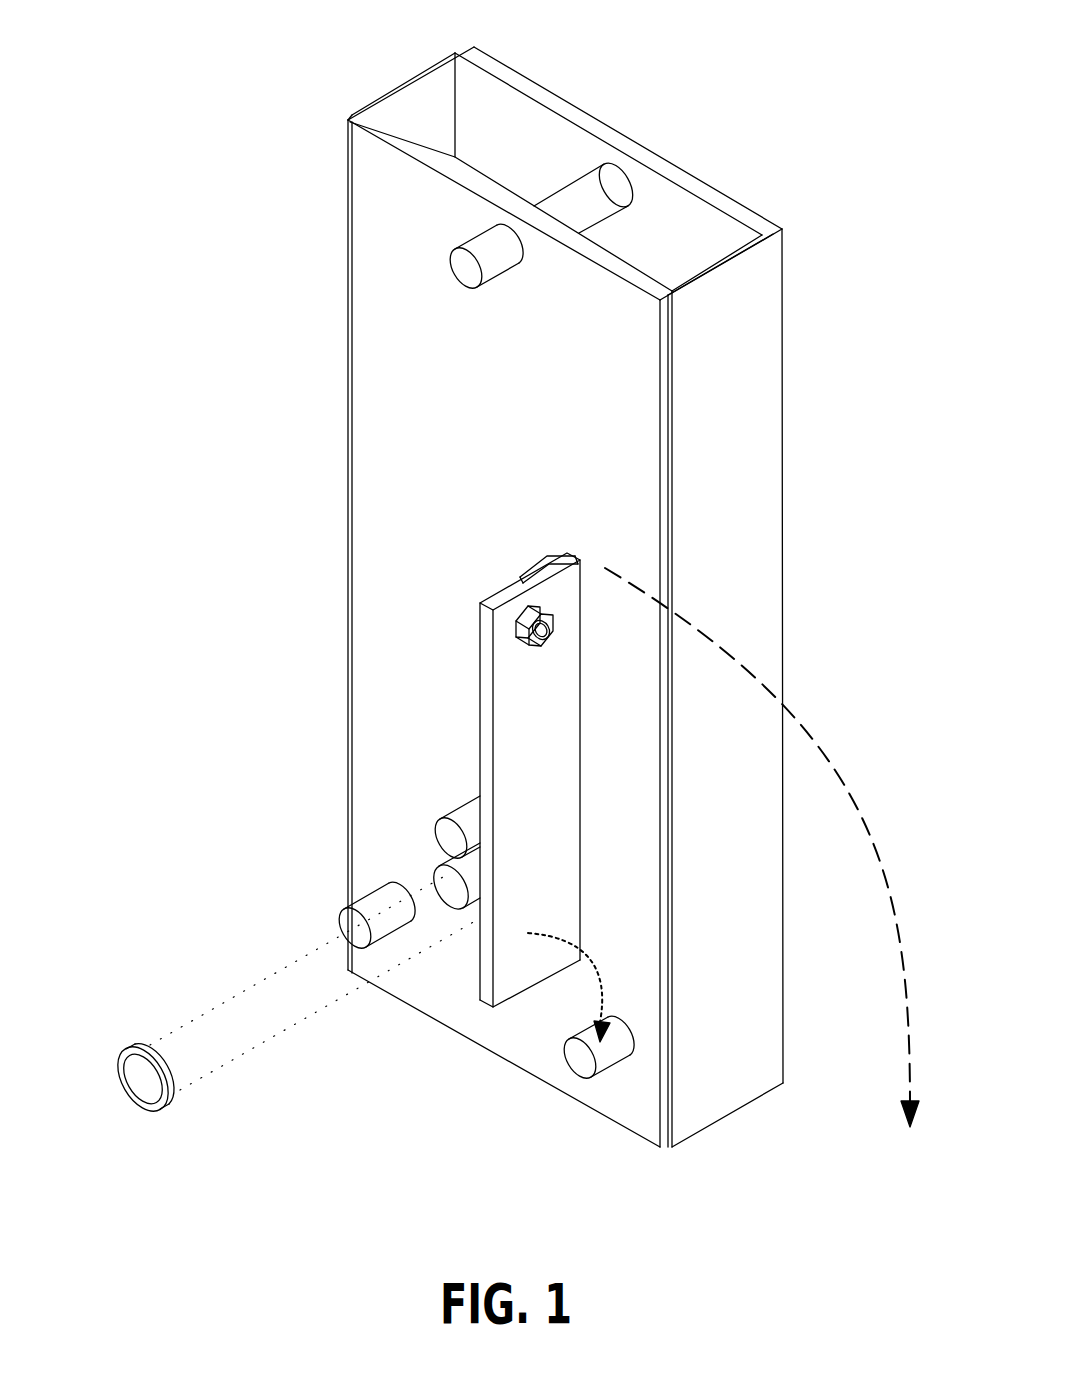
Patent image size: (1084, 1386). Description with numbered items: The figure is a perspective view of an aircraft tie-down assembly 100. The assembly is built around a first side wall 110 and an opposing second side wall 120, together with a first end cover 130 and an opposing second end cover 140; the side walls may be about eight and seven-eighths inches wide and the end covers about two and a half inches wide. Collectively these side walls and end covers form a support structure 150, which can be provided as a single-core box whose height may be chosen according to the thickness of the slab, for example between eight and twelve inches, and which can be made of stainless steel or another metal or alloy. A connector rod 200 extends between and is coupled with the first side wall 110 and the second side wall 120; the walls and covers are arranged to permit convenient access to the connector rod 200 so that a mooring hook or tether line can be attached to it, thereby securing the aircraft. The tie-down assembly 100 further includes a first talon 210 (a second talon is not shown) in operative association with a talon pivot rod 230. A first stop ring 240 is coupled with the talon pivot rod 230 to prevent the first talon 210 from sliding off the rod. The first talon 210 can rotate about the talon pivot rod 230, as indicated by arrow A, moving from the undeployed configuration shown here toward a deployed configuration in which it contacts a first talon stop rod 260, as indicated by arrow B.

The tie-down assembly 100 is at (162, 118).
The first side wall 110 is at (445, 1020).
The second side wall 120 is at (563, 100).
The first end cover 130 is at (732, 1118).
The second end cover 140 is at (400, 80).
The support structure 150 is at (835, 230).
The connector rod 200 is at (440, 270).
The first talon 210 is at (470, 690).
The talon pivot rod 230 is at (470, 855).
The first stop ring 240 is at (127, 1033).
The first talon stop rod 260 is at (622, 1078).